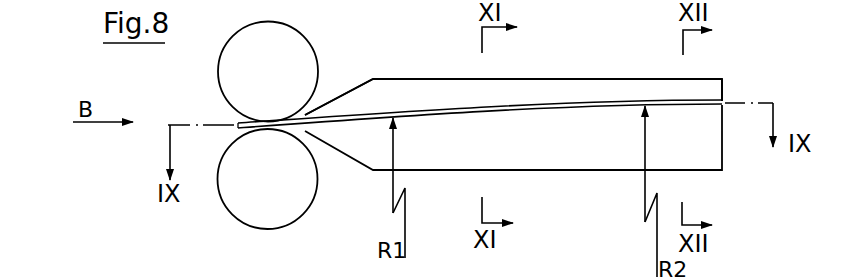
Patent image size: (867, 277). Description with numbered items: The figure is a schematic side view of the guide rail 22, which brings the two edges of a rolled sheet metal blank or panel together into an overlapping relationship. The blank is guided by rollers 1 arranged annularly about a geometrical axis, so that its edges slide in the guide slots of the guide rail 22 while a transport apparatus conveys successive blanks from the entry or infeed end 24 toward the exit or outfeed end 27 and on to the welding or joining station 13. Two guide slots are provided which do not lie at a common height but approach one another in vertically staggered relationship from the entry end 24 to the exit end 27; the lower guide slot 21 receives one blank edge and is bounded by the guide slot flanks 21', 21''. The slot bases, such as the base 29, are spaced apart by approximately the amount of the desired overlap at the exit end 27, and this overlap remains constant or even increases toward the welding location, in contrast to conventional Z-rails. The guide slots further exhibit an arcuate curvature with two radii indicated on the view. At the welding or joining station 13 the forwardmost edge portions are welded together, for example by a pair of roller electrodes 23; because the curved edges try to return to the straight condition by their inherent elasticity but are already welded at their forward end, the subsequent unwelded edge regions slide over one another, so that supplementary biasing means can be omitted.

The rollers 1 is at (628, 79).
The welding or joining station 13 is at (200, 142).
The lower guide slot 21 is at (552, 178).
The guide slot flank 21' is at (599, 178).
The guide slot flank 21'' is at (558, 68).
The guide rail 22 is at (625, 18).
The roller electrodes 23 is at (219, 68).
The entry or infeed end 24 is at (724, 90).
The exit or outfeed end 27 is at (347, 92).
The guide slot base 29 is at (422, 110).